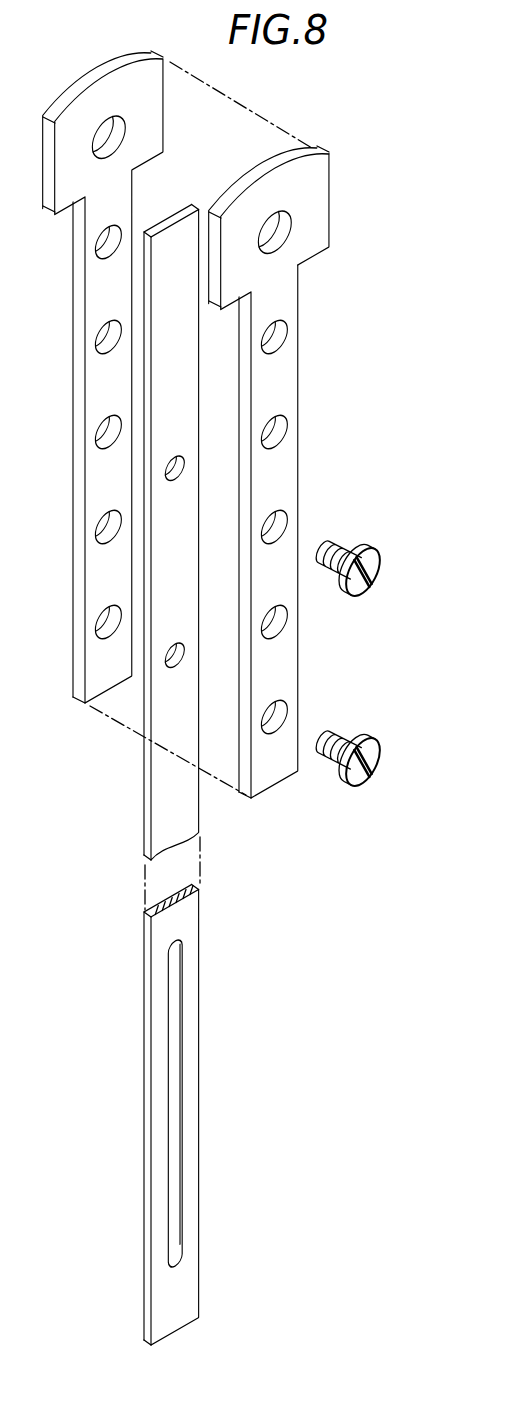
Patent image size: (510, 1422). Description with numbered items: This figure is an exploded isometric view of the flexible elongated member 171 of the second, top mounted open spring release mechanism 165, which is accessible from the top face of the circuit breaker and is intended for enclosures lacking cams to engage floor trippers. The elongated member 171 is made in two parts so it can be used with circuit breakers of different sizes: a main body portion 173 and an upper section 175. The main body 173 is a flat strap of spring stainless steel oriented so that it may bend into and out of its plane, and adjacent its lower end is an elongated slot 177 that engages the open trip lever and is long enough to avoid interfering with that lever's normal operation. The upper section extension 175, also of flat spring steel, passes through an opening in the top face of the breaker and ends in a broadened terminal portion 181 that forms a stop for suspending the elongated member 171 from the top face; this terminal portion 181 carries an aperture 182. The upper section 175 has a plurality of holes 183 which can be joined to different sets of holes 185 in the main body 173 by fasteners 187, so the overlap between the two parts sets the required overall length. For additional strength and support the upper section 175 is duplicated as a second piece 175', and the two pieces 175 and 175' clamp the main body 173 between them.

The top mounted open spring release mechanism 165 is at (226, 164).
The flexible elongated member 171 is at (289, 866).
The main body portion 173 is at (162, 798).
The upper section 175 is at (286, 473).
The duplicate upper section 175' is at (91, 378).
The elongated slot 177 is at (181, 1078).
The broadened terminal portion 181 is at (318, 238).
The aperture 182 is at (283, 219).
The holes 183 is at (288, 522).
The holes 185 is at (181, 478).
The fasteners 187 is at (370, 556).